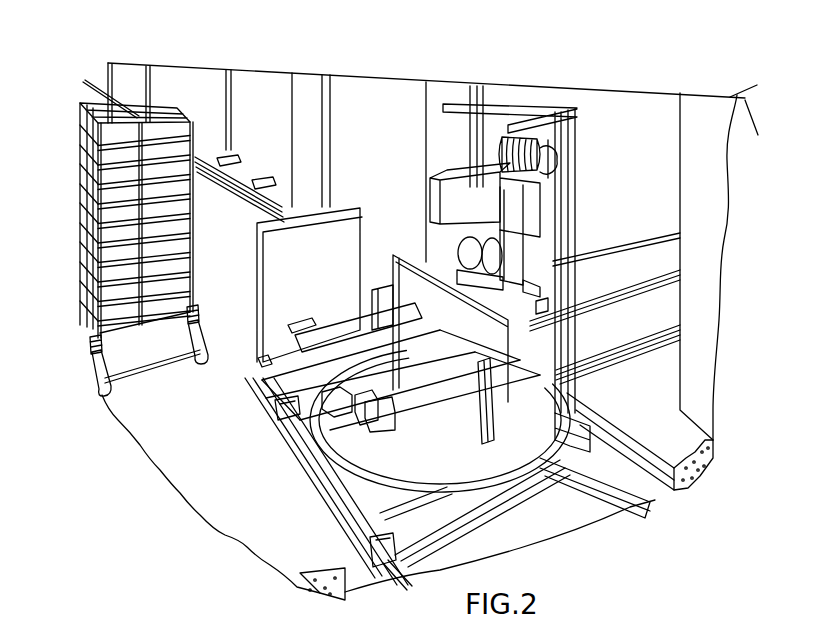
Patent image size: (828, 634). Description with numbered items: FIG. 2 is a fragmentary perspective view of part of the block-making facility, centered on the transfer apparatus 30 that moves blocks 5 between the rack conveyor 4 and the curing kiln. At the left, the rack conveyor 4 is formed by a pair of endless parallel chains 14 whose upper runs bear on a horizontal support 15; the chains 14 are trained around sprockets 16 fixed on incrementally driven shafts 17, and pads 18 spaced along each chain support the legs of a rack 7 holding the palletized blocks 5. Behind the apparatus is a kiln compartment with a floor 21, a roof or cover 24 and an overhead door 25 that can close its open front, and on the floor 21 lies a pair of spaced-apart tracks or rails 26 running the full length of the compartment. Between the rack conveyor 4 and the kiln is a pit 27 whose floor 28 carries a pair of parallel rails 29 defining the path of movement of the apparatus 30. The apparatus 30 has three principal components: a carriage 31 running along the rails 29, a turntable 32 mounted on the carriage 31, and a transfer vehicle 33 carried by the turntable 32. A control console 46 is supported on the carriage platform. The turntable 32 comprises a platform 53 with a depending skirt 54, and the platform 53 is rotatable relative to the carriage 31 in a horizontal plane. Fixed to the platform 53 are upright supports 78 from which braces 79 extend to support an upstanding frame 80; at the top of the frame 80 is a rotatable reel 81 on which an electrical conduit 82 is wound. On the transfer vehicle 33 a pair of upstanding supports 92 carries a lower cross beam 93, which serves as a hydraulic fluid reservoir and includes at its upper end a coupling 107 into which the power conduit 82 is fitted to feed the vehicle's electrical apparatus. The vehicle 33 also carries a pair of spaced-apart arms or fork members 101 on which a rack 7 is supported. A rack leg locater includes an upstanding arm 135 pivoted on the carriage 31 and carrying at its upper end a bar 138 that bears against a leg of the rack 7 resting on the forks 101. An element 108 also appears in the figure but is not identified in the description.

The rack conveyor 4 is at (118, 359).
The blocks 5 is at (107, 298).
The rack 7 is at (77, 265).
The chains 14 is at (190, 343).
The horizontal support 15 is at (220, 454).
The sprockets 16 is at (190, 366).
The shafts 17 is at (148, 372).
The pad 18 is at (90, 339).
The floor 21 is at (647, 409).
The roof or cover 24 is at (743, 262).
The overhead door 25 is at (270, 119).
The tracks or rails 26 is at (269, 180).
The pit 27 is at (657, 497).
The floor of the pit 28 is at (590, 512).
The rails 29 is at (407, 568).
The apparatus for transferring blocks 30 is at (412, 232).
The carriage 31 is at (503, 507).
The turntable 32 is at (441, 503).
The transfer vehicle 33 is at (540, 307).
The control console 46 is at (331, 269).
The platform 53 is at (463, 482).
The depending skirt 54 is at (523, 457).
The upright supports 78 is at (368, 297).
The braces 79 is at (568, 372).
The upstanding frame 80 is at (572, 194).
The rotatable reel 81 is at (540, 155).
The electrical conduit 82 is at (527, 140).
The upstanding supports 92 is at (442, 263).
The lower cross beam 93 is at (548, 232).
The arms or fork members 101 is at (340, 335).
The coupling 107 is at (480, 187).
The block 108 is at (525, 280).
The upstanding arm 135 is at (262, 363).
The bar 138 is at (296, 320).